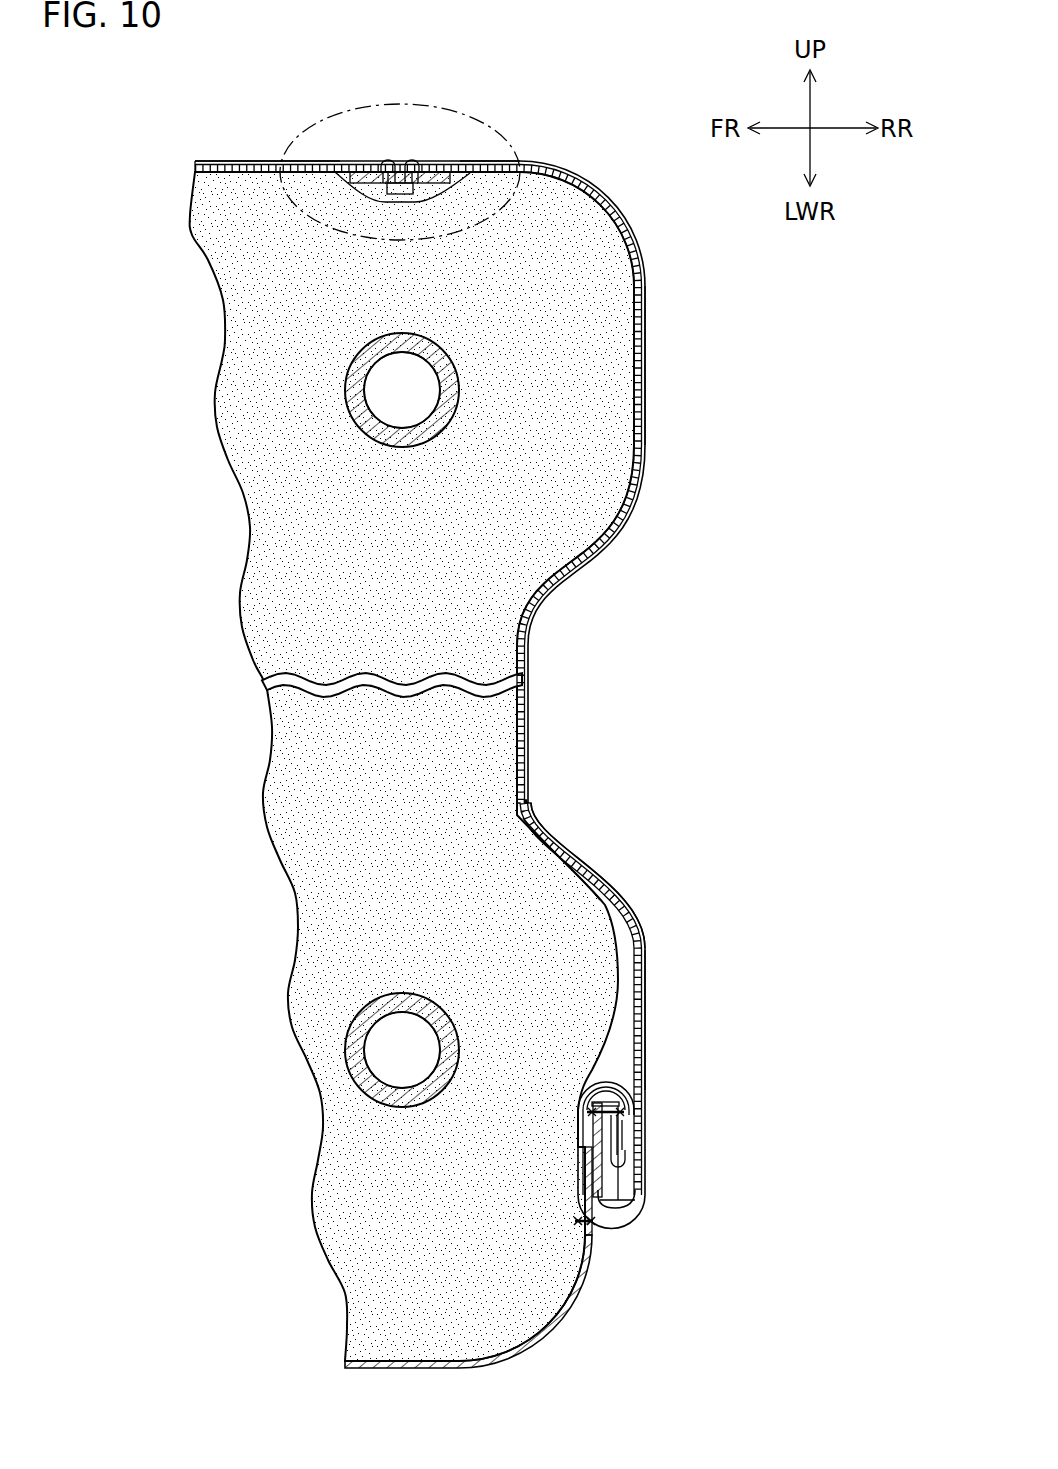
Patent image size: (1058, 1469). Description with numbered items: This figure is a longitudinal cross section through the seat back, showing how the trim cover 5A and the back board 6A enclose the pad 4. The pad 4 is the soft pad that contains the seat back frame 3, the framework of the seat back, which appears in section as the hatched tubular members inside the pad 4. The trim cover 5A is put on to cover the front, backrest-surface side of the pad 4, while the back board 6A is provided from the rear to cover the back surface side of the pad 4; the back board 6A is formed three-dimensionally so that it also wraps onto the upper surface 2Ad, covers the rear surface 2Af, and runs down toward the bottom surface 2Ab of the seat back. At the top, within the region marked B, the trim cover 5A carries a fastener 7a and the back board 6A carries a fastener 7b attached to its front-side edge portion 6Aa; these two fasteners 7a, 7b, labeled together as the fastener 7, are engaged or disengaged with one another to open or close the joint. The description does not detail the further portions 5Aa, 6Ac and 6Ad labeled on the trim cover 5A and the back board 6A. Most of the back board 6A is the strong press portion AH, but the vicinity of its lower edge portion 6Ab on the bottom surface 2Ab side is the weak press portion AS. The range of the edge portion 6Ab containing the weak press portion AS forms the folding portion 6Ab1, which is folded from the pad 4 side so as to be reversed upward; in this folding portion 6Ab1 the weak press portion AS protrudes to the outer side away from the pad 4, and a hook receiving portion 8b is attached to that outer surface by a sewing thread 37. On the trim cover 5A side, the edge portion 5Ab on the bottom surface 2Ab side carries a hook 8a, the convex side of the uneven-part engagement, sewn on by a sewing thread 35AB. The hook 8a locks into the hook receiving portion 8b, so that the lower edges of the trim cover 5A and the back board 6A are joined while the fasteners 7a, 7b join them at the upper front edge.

The pad 4 is at (327, 527).
The seat back frame 3 is at (348, 372).
The trim cover 5A is at (202, 158).
The recess of inner panel 5Aa is at (297, 131).
The edge portion 5Ab is at (606, 1250).
The back board 6A is at (637, 232).
The edge portion 6Aa is at (496, 120).
The edge portion 6Ab is at (655, 1241).
The folding portion 6Ab1 is at (586, 1112).
The curved portion of outer panel 6Ac is at (612, 916).
The lower wall of outer panel 6Ad is at (647, 932).
The clip 7 is at (330, 183).
The fastener 7a is at (367, 210).
The fastener 7b is at (437, 206).
The hook 8a is at (605, 1082).
The hook receiving portion 8b is at (622, 1188).
The sewing thread 37 is at (614, 1086).
The weak press portion AS is at (624, 1135).
The strong press portion AH is at (556, 205).
The B section B is at (508, 126).
The upper wall 2Ad is at (258, 132).
The front wall 2Af is at (679, 408).
The bottom surface 2Ab is at (520, 1366).
The sewing thread 35AB is at (574, 1224).